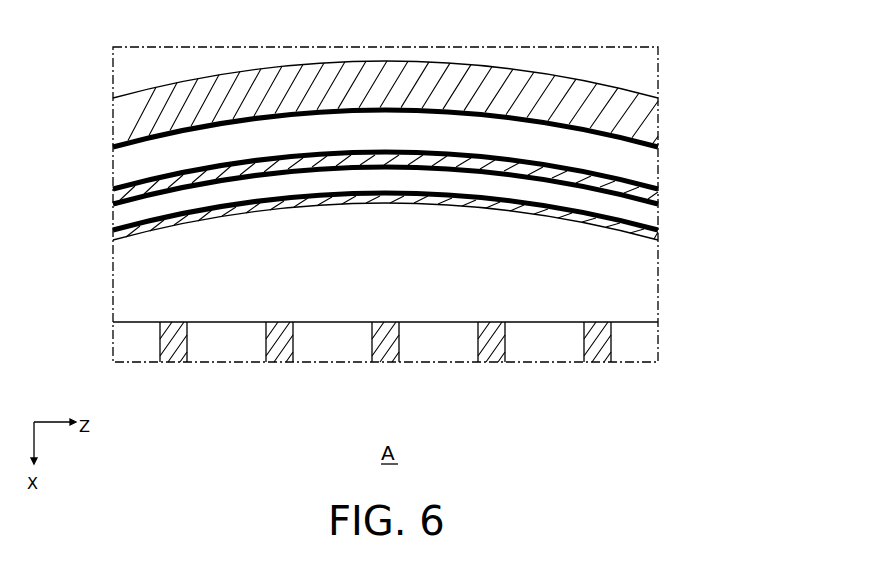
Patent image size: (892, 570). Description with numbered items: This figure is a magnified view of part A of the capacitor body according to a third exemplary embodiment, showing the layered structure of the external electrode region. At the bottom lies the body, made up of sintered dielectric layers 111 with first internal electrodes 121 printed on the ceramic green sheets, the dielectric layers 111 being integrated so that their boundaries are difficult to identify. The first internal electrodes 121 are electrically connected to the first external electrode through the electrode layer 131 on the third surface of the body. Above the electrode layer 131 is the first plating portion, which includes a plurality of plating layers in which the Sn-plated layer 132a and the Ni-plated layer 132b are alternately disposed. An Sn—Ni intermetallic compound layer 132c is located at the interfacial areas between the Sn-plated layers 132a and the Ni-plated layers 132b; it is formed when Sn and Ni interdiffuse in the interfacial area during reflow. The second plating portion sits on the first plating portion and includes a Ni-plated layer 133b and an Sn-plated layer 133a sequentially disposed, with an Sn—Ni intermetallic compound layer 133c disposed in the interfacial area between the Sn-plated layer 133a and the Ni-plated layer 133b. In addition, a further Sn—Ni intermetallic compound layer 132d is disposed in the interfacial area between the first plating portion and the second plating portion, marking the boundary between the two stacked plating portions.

The dielectric layer 111 is at (542, 347).
The first internal electrode 121 is at (600, 357).
The electrode layer 131 is at (622, 308).
The Sn-plated layer 132a is at (640, 191).
The Ni-plated layer 132b is at (632, 216).
The Sn—Ni intermetallic compound layer 132c is at (640, 203).
The Sn—Ni intermetallic compound layer 132d is at (636, 184).
The Sn-plated layer 133a is at (645, 108).
The Ni-plated layer 133b is at (645, 153).
The Sn—Ni intermetallic compound layer 133c is at (645, 141).